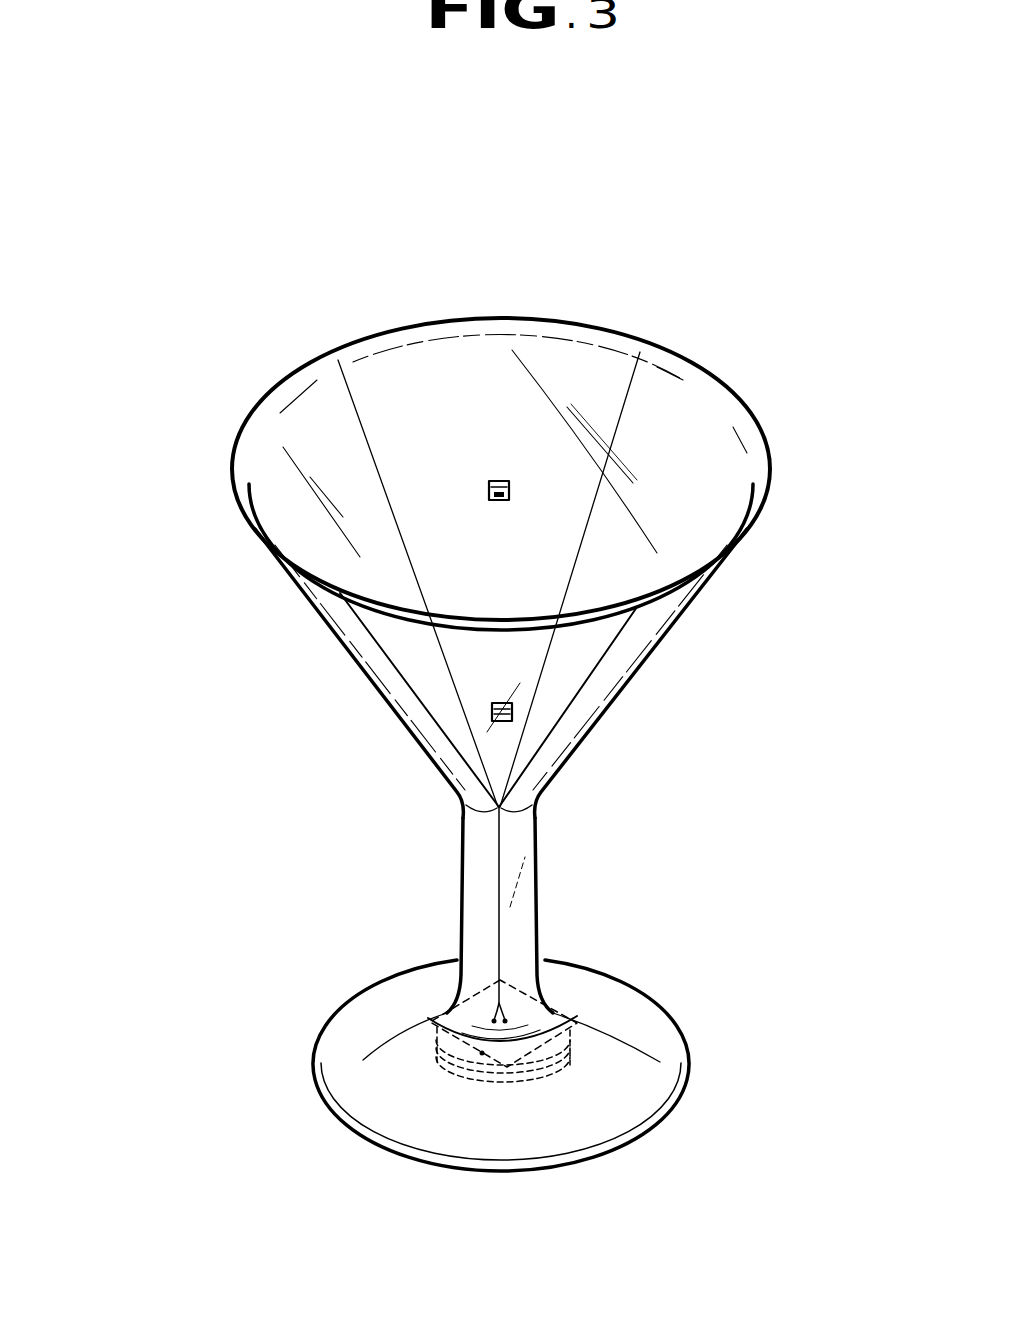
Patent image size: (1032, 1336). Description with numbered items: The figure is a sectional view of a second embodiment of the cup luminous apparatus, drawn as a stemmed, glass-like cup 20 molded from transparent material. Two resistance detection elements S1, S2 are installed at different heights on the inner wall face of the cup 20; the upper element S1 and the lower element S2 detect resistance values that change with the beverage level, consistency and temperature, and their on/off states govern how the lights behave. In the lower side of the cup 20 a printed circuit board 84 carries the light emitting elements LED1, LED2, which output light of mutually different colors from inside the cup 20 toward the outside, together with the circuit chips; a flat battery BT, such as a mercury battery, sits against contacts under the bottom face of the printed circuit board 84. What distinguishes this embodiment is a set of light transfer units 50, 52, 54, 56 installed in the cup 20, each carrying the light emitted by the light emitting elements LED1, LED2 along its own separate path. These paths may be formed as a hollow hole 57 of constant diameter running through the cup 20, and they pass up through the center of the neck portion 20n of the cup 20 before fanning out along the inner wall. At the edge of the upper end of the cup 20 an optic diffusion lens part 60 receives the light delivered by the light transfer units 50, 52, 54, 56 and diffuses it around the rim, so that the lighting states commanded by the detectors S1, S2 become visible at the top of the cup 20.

The cup 20 is at (555, 323).
The neck portion 20n is at (535, 898).
The optic diffusion lens part 60 is at (247, 517).
The light transfer unit 50 is at (634, 368).
The light transfer unit 52 is at (633, 618).
The light transfer unit 54 is at (377, 653).
The light transfer unit 56 is at (357, 403).
The hollow hole 57 is at (500, 842).
The resistance detection element S1 is at (499, 479).
The resistance detection element S2 is at (513, 713).
The light emitting element LED1 is at (491, 1021).
The light emitting element LED2 is at (508, 1022).
The printed circuit board 84 is at (482, 1053).
The battery BT is at (527, 1070).